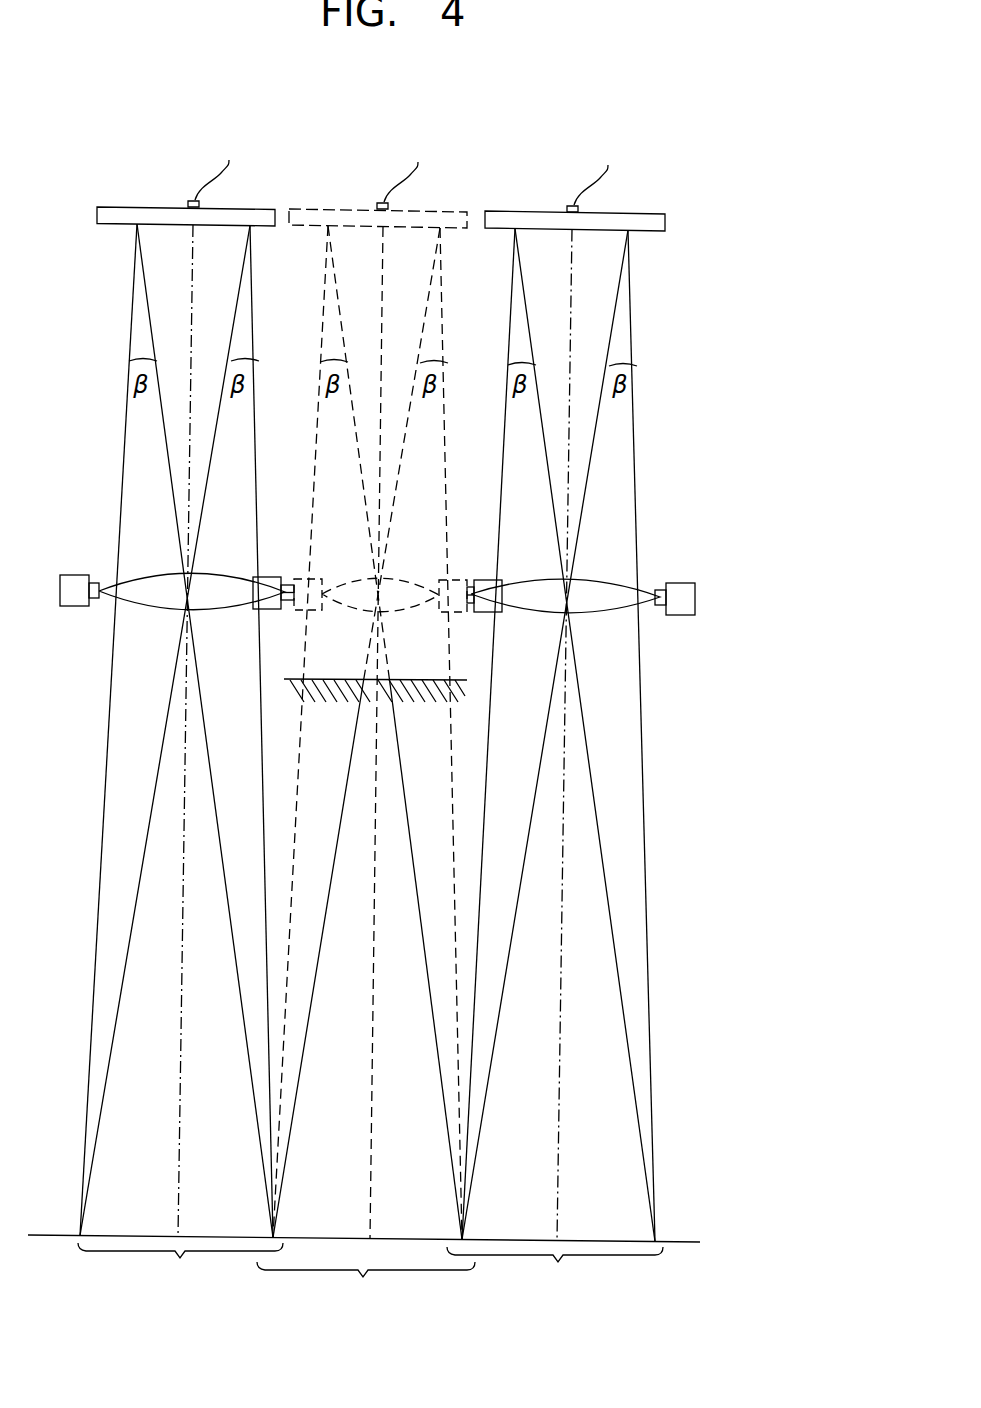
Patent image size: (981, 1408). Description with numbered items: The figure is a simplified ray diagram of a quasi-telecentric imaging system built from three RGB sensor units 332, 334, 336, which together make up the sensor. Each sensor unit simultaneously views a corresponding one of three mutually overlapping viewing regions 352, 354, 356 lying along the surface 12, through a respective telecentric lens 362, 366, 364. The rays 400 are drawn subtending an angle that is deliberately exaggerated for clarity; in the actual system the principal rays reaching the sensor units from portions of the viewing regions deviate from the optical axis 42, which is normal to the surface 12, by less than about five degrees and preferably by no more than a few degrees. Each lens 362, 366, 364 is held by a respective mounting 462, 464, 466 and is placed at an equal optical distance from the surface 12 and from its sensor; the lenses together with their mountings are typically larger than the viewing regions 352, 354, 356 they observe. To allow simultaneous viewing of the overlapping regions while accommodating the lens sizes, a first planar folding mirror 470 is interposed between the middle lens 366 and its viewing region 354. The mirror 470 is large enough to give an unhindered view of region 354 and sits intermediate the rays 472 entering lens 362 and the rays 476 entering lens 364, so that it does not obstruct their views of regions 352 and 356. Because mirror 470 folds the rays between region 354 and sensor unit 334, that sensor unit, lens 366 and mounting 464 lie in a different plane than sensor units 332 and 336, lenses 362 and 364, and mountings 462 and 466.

The surface 12 is at (683, 1243).
The optical axis 42 is at (182, 1072).
The RGB sensor unit 332 is at (144, 206).
The RGB sensor unit 334 is at (439, 210).
The RGB sensor unit 336 is at (647, 212).
The viewing region 352 is at (180, 1268).
The viewing region 354 is at (366, 1288).
The viewing region 356 is at (555, 1272).
The telecentric lens 362 is at (213, 580).
The telecentric lens 364 is at (593, 585).
The telecentric lens 366 is at (340, 582).
The rays 400 is at (125, 429).
The mounting 462 is at (77, 598).
The mounting 464 is at (255, 612).
The mounting 466 is at (447, 612).
The first planar folding mirror 470 is at (318, 703).
The rays 472 is at (262, 693).
The rays 476 is at (488, 703).